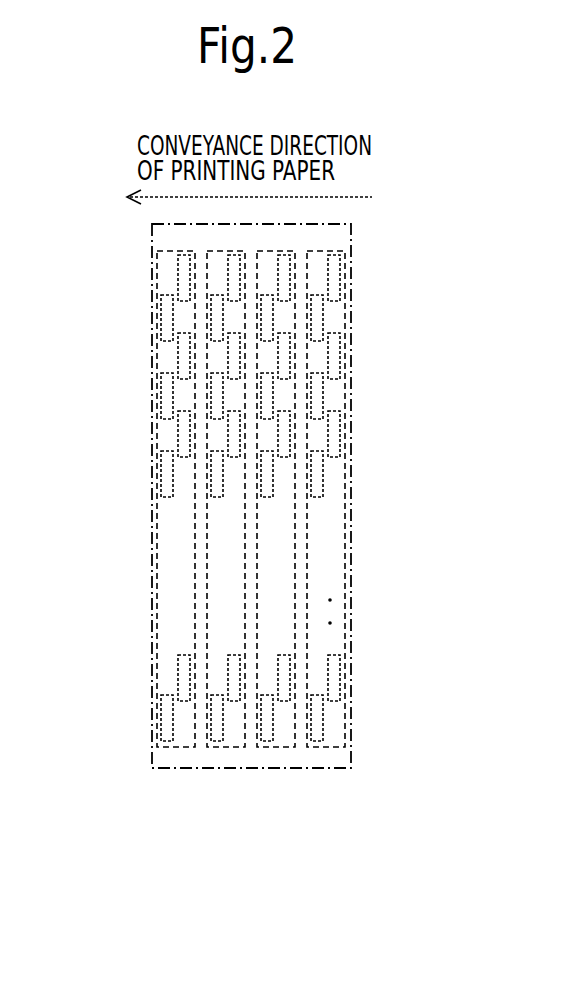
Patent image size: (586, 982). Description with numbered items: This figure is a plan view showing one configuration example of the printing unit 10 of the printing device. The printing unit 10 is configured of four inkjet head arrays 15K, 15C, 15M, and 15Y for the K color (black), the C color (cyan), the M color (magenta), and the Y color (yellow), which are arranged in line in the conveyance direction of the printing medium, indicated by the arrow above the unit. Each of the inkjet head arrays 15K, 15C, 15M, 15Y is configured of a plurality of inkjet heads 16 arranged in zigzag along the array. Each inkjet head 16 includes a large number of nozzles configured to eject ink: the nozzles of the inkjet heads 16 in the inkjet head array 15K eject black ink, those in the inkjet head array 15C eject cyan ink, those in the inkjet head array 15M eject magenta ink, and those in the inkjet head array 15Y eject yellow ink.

The printing unit 10 is at (152, 567).
The inkjet head 16 is at (178, 276).
The inkjet head array for the Y color 15Y is at (173, 768).
The inkjet head array for the M color 15M is at (222, 768).
The inkjet head array for the C color 15C is at (273, 768).
The inkjet head array for the K color 15K is at (323, 768).